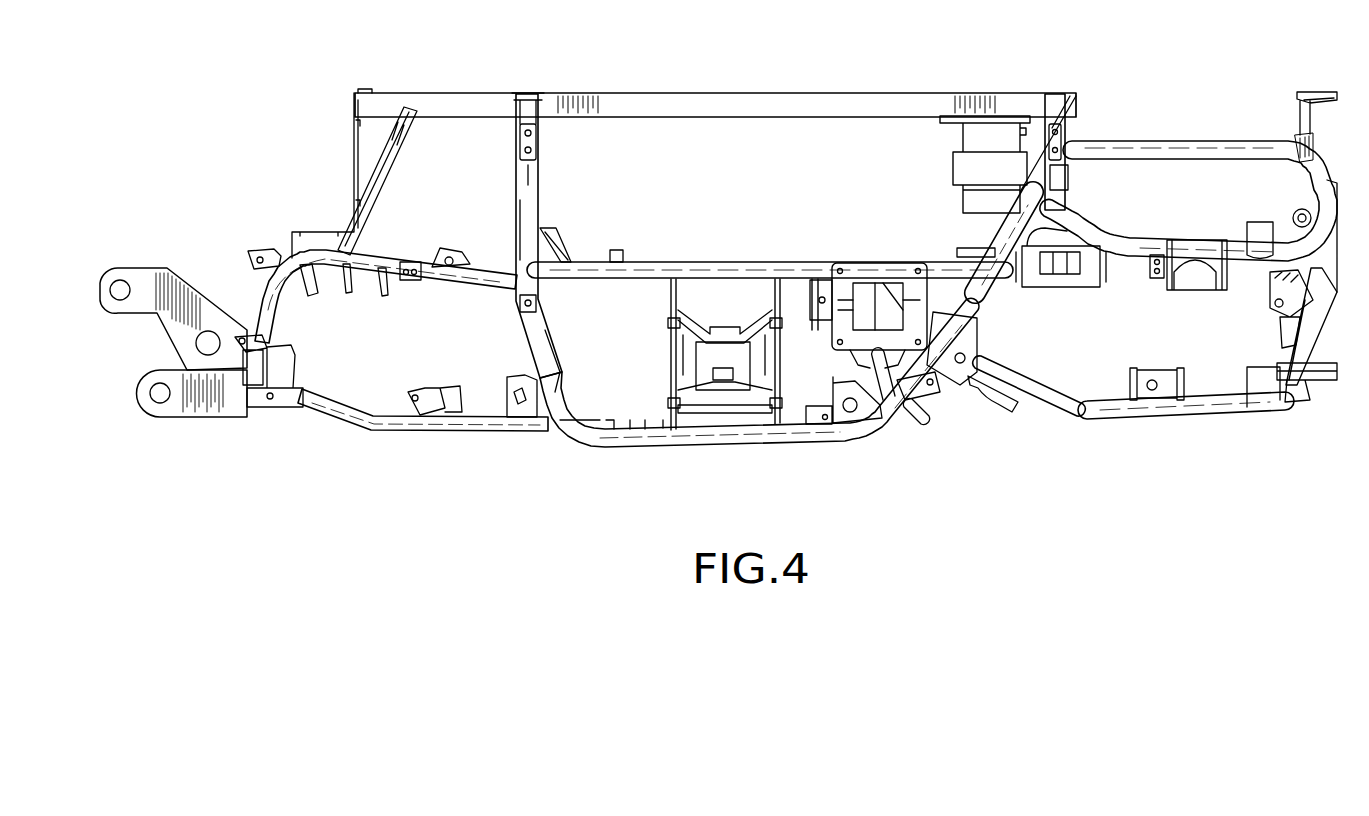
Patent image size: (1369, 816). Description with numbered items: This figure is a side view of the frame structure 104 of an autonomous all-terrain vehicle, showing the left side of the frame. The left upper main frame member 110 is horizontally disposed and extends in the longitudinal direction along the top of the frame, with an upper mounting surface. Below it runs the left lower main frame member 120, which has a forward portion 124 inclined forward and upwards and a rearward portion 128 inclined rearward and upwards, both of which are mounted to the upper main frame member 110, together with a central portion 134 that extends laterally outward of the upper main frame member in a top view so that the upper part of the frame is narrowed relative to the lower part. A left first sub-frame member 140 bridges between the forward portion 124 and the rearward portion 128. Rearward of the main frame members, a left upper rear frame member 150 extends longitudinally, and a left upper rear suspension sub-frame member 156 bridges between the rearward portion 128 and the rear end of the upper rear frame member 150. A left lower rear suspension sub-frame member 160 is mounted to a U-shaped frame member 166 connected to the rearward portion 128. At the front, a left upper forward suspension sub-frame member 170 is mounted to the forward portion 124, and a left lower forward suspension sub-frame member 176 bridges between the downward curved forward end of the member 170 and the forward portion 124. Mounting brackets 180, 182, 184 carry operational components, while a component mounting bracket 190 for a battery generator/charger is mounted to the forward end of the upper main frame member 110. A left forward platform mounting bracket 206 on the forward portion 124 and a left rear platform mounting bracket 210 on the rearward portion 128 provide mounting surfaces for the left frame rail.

The frame structure 104 is at (502, 472).
The left upper main frame member 110 is at (773, 93).
The left lower main frame member 120 is at (730, 450).
The forward portion 124 is at (530, 203).
The rearward portion 128 is at (998, 275).
The central portion 134 is at (693, 452).
The left first sub-frame member 140 is at (753, 262).
The left upper rear frame member 150 is at (1193, 140).
The left upper rear suspension sub-frame member 156 is at (1132, 258).
The left lower rear suspension sub-frame member 160 is at (1155, 412).
The U-shaped frame member 166 is at (1047, 400).
The left upper forward suspension sub-frame member 170 is at (437, 285).
The left lower forward suspension sub-frame member 176 is at (355, 428).
The mounting bracket 180 is at (685, 360).
The mounting bracket 182 is at (878, 276).
The mounting bracket 184 is at (963, 138).
The component mounting bracket 190 is at (353, 157).
The left forward platform mounting bracket 206 is at (541, 108).
The left rear platform mounting bracket 210 is at (1073, 107).